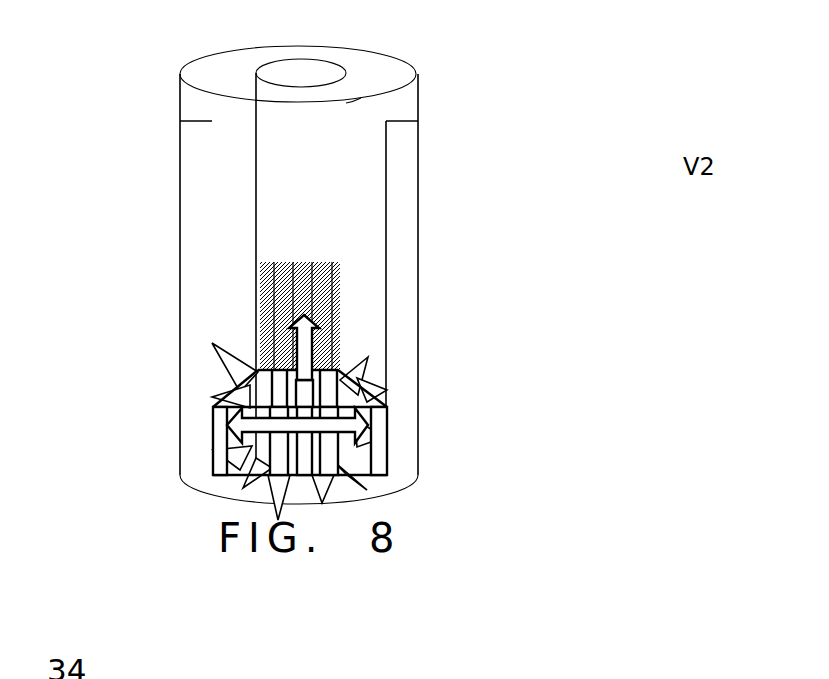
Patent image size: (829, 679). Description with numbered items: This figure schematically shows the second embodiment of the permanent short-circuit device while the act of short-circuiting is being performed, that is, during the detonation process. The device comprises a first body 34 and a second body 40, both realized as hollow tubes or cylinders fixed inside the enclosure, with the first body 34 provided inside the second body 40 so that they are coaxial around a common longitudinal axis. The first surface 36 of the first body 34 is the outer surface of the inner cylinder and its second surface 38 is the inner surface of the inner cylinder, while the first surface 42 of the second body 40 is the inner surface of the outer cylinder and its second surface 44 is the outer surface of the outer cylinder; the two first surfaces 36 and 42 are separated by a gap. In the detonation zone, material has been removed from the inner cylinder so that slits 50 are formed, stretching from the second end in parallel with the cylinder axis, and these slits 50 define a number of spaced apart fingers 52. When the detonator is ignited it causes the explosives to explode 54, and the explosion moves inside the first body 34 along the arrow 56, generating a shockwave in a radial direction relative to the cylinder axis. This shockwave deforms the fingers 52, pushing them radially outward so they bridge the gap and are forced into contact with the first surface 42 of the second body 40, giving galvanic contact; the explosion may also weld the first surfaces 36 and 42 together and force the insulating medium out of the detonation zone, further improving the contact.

The first body 34 is at (300, 152).
The first surface of the first body 36 is at (250, 125).
The second surface of the first body 38 is at (256, 78).
The second body 40 is at (408, 248).
The first surface of the second body 42 is at (383, 185).
The second surface of the second body 44 is at (180, 192).
The slits 50 is at (332, 337).
The fingers 52 is at (268, 455).
The explosion of the explosives 54 is at (332, 457).
The arrow 56 is at (307, 319).